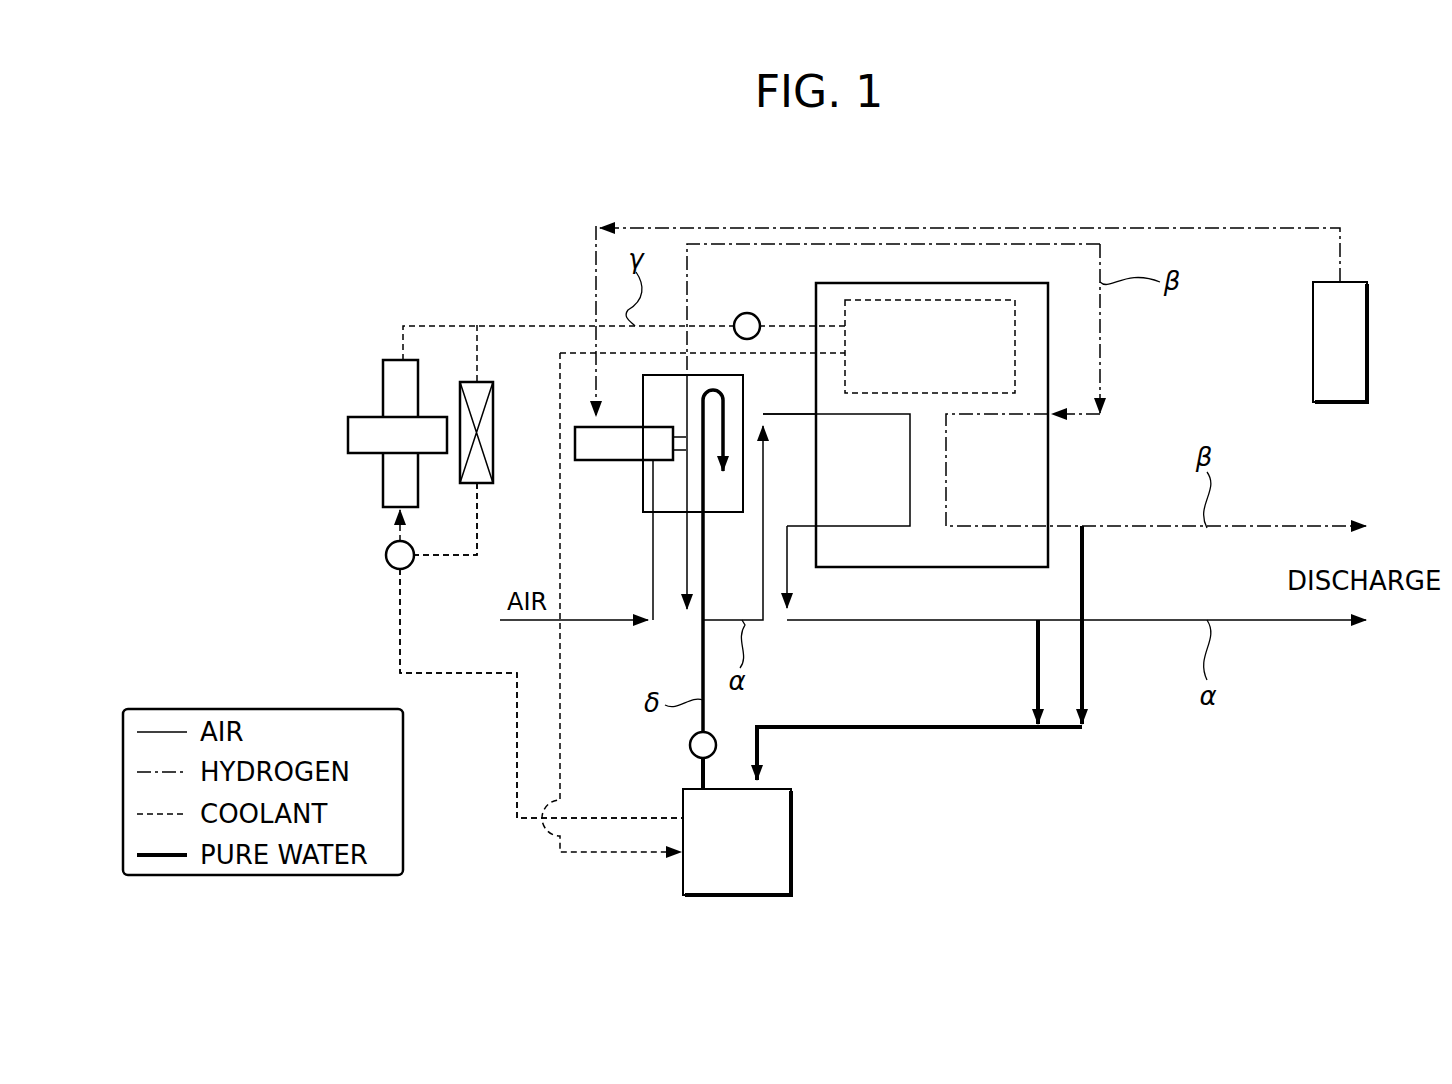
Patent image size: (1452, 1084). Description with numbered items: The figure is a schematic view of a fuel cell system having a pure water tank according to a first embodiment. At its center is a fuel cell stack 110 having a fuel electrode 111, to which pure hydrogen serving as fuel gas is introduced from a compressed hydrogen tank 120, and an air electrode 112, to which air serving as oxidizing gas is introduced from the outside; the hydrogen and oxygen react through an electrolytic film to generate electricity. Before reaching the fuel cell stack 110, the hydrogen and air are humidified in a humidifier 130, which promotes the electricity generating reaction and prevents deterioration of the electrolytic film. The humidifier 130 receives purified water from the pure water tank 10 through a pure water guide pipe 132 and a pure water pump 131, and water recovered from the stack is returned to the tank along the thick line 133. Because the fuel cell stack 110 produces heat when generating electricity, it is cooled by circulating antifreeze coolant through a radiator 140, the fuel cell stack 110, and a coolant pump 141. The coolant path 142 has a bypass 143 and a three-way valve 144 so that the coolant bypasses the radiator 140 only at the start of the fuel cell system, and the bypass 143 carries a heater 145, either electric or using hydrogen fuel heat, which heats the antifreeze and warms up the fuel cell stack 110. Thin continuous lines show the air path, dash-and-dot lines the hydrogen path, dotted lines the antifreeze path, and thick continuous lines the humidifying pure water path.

The pure water tank 10 is at (796, 813).
The fuel cell stack 110 is at (938, 279).
The fuel electrode 111 is at (978, 481).
The air electrode 112 is at (841, 481).
The compressed hydrogen tank 120 is at (1311, 339).
The humidifier 130 is at (641, 485).
The pure water pump 131 is at (690, 745).
The pure water guide pipe 132 is at (703, 662).
The pure water recovery line 133 is at (980, 730).
The radiator 140 is at (383, 395).
The coolant pump 141 is at (745, 313).
The coolant path 142 is at (398, 615).
The bypass 143 is at (445, 557).
The three-way valve 144 is at (386, 553).
The heater 145 is at (477, 382).